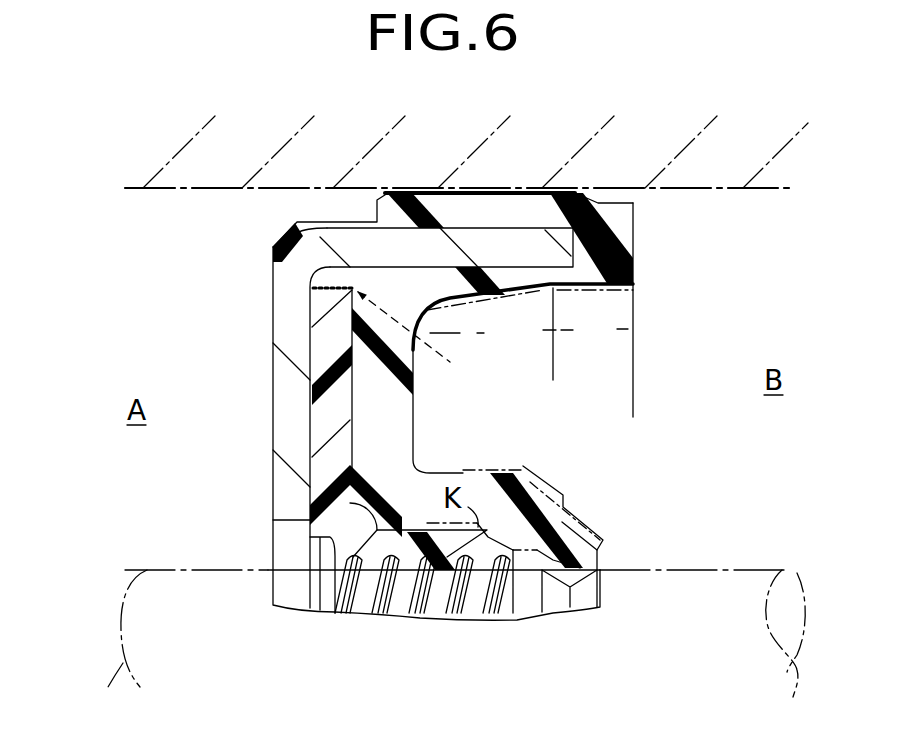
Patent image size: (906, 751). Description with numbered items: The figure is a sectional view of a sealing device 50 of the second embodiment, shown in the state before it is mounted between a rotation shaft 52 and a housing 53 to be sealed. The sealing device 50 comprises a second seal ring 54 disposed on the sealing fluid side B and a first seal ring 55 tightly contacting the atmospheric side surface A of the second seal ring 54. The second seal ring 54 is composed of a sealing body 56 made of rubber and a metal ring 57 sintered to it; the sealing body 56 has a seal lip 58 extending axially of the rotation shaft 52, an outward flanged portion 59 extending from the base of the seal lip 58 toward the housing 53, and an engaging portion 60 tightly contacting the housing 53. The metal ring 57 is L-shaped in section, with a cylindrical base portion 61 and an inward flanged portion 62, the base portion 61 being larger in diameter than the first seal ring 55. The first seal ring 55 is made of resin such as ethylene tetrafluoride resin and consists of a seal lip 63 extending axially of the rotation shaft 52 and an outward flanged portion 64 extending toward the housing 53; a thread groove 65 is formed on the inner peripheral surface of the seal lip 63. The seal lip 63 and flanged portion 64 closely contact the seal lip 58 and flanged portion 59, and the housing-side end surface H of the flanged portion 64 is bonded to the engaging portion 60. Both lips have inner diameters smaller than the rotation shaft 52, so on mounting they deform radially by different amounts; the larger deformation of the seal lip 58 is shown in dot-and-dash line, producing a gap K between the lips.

The sealing device 50 is at (163, 357).
The rotation shaft 52 is at (674, 566).
The housing 53 is at (138, 196).
The second seal ring 54 is at (643, 265).
The first seal ring 55 is at (307, 520).
The sealing body 56 is at (470, 302).
The metal ring 57 is at (450, 240).
The seal lip 58 is at (570, 512).
The outward flanged portion 59 is at (398, 433).
The engaging portion 60 is at (597, 273).
The cylindrical base portion 61 is at (397, 240).
The inward flanged portion 62 is at (272, 367).
The seal lip 63 is at (438, 597).
The outward flanged portion 64 is at (310, 423).
The thread groove 65 is at (383, 597).